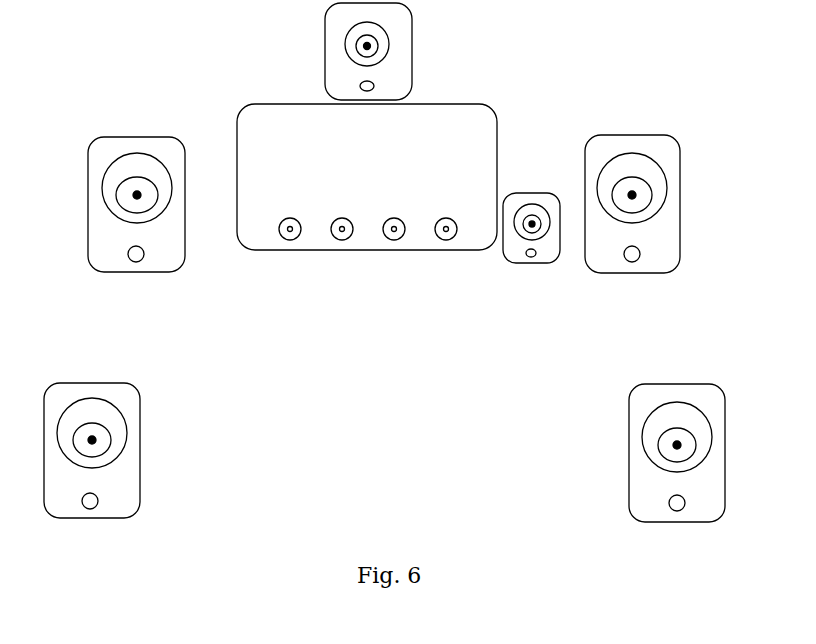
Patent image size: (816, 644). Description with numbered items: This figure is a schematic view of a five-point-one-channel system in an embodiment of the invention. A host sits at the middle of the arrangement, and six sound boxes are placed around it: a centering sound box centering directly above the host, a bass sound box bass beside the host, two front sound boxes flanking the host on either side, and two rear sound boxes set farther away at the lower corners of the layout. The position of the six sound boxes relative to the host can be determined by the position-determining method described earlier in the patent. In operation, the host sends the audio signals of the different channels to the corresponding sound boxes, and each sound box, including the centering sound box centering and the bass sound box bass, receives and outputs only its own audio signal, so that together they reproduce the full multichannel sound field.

The centering sound box centering is at (400, 67).
The bass sound box bass is at (517, 245).